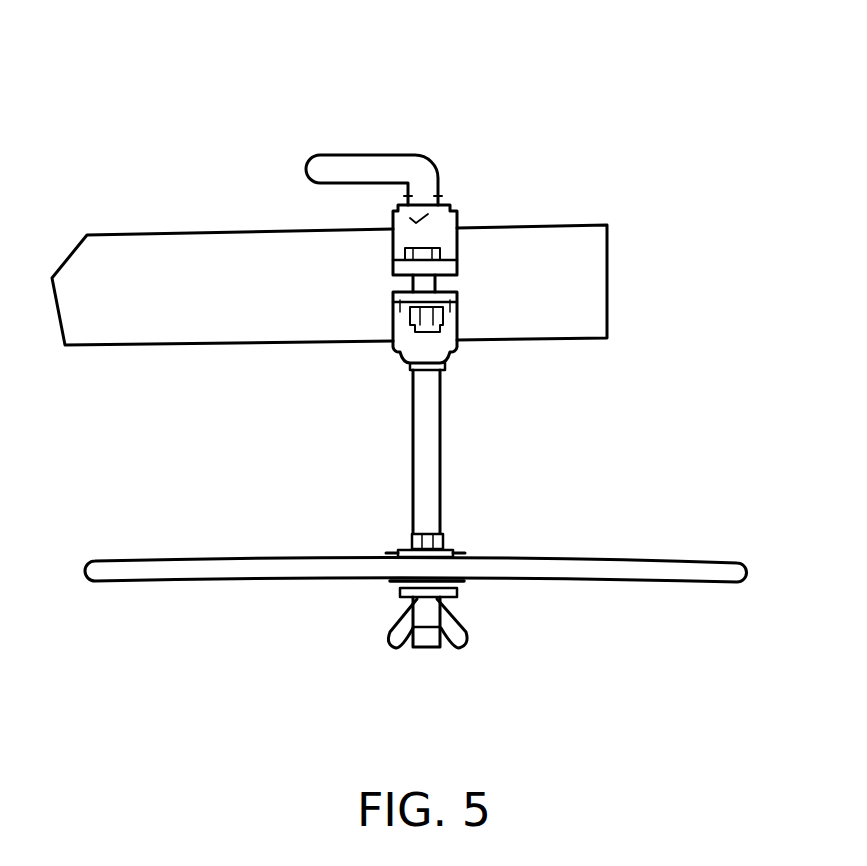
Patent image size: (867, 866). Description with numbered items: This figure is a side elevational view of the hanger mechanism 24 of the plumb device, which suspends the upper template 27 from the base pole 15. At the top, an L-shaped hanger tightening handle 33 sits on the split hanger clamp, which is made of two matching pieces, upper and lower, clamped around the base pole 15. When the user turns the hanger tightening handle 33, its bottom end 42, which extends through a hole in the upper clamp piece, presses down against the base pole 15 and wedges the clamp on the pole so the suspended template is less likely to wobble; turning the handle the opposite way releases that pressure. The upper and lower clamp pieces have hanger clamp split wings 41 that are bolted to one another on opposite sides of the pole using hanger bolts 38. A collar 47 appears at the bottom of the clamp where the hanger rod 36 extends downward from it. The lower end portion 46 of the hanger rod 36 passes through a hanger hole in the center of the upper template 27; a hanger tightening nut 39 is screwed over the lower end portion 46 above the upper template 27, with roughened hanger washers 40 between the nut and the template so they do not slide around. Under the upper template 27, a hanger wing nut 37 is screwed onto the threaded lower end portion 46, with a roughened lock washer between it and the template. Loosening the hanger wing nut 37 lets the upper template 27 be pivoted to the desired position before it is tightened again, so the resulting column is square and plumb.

The hanger mechanism 24 is at (459, 90).
The base pole 15 is at (157, 260).
The hanger tightening handle 33 is at (363, 165).
The bottom end of the hanger tightening handle 42 is at (413, 212).
The hanger clamp split wings 41 is at (393, 268).
The hanger bolts 38 is at (405, 303).
The collar 47 is at (441, 368).
The hanger rod 36 is at (441, 440).
The lower end portion of the hanger rod 46 is at (447, 523).
The hanger tightening nut 39 is at (410, 543).
The hanger washers 40 is at (455, 550).
The upper template 27 is at (702, 572).
The hanger wing nut 37 is at (437, 615).